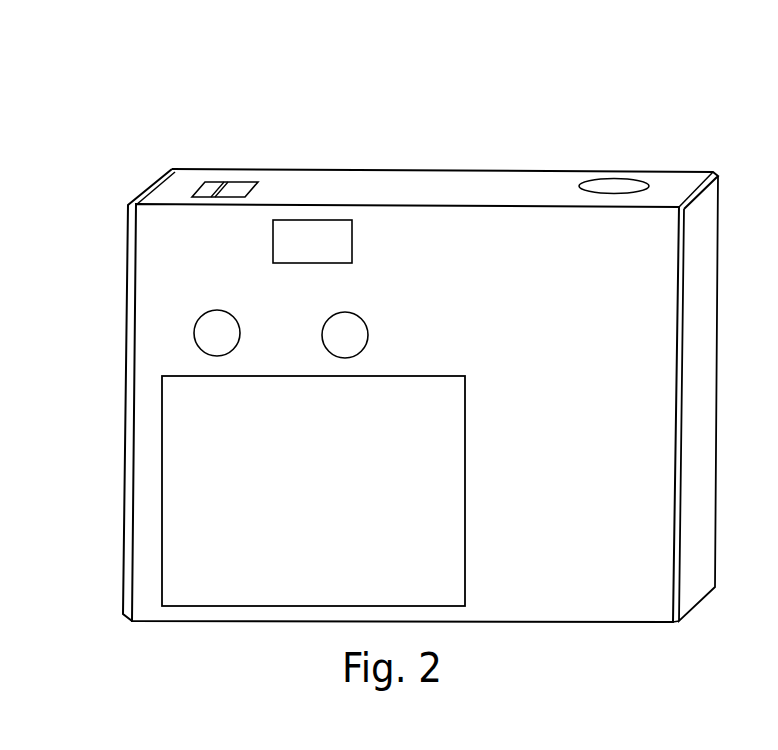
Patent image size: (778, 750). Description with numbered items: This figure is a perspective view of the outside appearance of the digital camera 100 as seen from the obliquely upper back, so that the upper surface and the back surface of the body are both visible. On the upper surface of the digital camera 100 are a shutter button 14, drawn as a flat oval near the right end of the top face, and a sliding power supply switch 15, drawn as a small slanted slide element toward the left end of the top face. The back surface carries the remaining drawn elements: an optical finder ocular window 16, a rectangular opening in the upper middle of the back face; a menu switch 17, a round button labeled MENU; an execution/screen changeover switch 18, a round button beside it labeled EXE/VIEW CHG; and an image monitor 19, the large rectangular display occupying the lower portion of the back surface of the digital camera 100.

The digital camera 100 is at (98, 128).
The shutter button 14 is at (603, 185).
The sliding power supply switch 15 is at (239, 188).
The optical finder ocular window 16 is at (318, 237).
The menu switch 17 is at (207, 331).
The execution/screen changeover switch 18 is at (343, 325).
The image monitor 19 is at (192, 495).